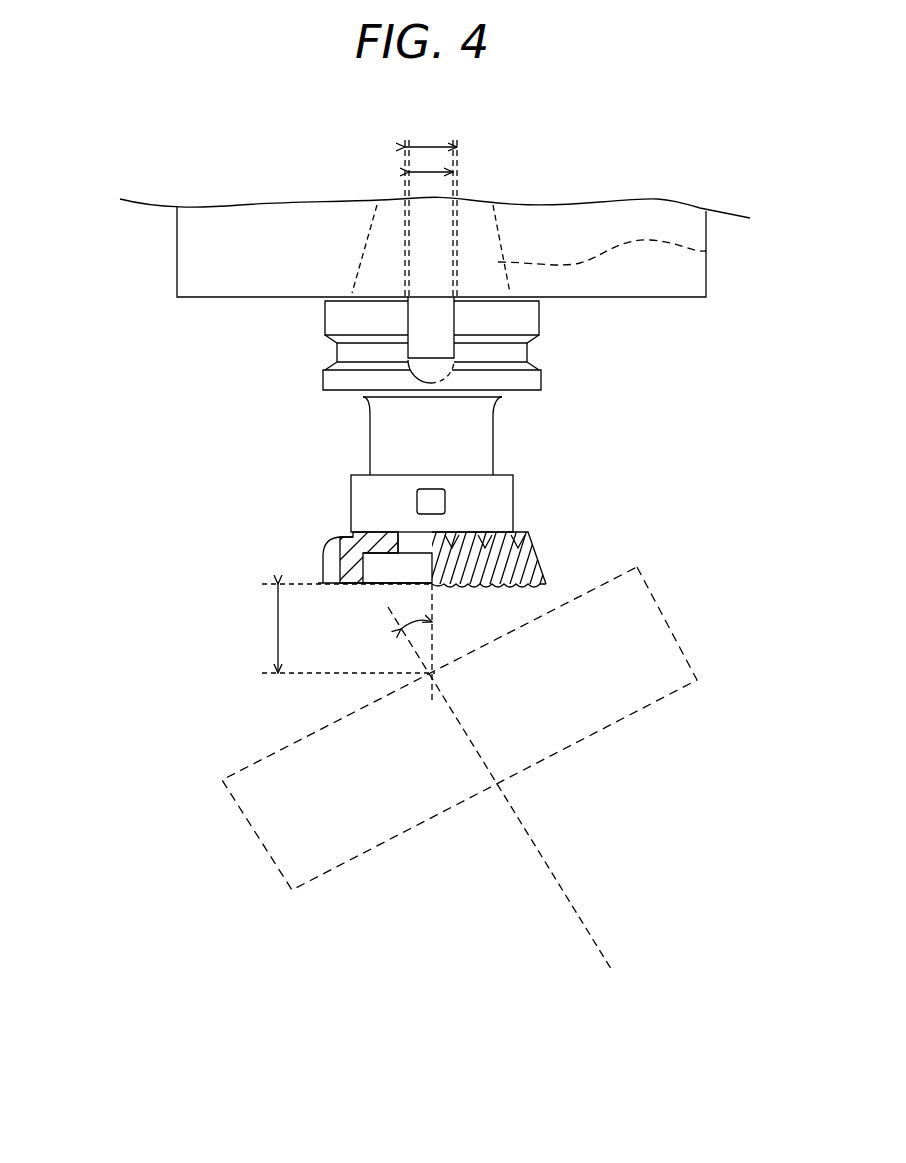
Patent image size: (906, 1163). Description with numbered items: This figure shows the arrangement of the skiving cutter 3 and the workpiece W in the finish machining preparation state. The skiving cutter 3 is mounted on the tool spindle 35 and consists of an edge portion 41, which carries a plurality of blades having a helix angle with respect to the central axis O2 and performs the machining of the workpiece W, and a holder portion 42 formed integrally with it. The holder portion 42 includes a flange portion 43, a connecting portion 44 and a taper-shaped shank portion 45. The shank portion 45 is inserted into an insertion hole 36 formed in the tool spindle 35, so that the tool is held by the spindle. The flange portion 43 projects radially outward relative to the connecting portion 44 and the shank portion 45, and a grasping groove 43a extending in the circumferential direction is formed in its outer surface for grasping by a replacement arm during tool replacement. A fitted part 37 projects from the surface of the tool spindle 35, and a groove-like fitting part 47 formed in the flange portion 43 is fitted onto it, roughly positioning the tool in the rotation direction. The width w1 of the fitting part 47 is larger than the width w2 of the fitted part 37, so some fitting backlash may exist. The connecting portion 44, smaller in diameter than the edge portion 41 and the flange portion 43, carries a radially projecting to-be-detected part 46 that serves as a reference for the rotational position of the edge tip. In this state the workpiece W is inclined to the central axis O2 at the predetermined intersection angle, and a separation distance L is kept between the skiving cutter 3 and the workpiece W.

The tool spindle 35 is at (178, 280).
The insertion hole 36 is at (377, 203).
The fitted part 37 is at (433, 312).
The flange portion 43 is at (337, 320).
The grasping groove 43a is at (340, 352).
The fitting part 47 is at (527, 352).
The holder portion 42 is at (582, 420).
The connecting portion 44 is at (370, 500).
The to-be-detected part 46 is at (445, 500).
The edge portion 41 is at (582, 556).
The shank portion 45 is at (706, 251).
The skiving cutter 3 is at (236, 548).
The workpiece W is at (239, 805).
The separation distance L is at (343, 628).
The central axis O2 is at (434, 604).
The width of the fitting part w1 is at (440, 147).
The width of the fitted part w2 is at (440, 172).